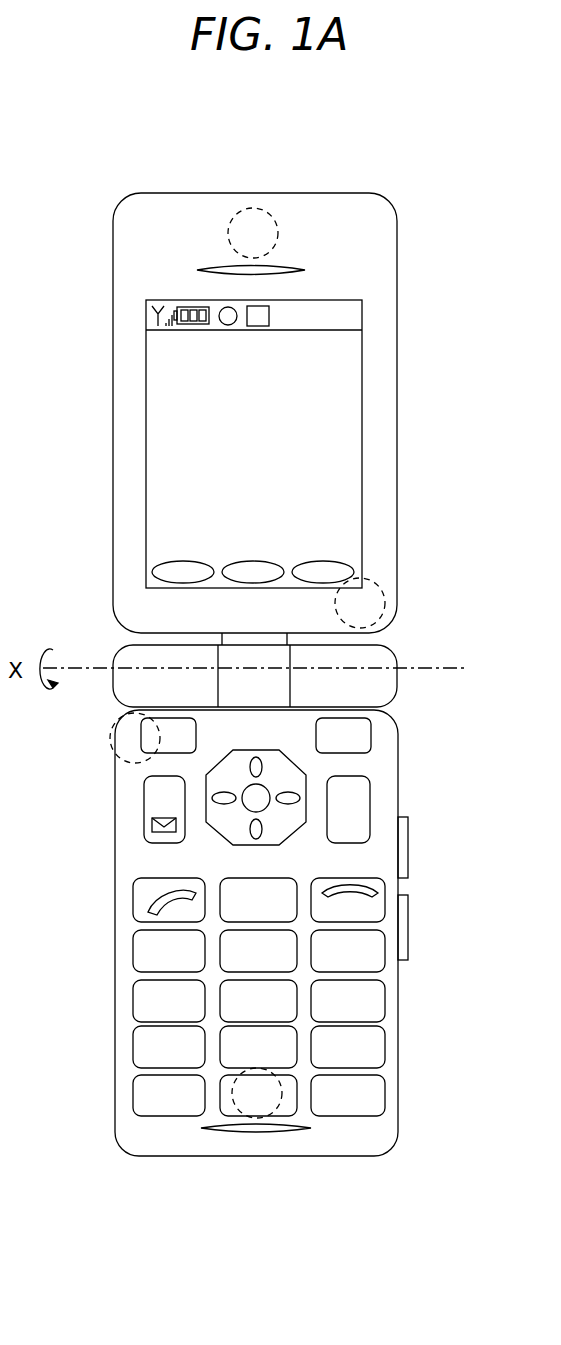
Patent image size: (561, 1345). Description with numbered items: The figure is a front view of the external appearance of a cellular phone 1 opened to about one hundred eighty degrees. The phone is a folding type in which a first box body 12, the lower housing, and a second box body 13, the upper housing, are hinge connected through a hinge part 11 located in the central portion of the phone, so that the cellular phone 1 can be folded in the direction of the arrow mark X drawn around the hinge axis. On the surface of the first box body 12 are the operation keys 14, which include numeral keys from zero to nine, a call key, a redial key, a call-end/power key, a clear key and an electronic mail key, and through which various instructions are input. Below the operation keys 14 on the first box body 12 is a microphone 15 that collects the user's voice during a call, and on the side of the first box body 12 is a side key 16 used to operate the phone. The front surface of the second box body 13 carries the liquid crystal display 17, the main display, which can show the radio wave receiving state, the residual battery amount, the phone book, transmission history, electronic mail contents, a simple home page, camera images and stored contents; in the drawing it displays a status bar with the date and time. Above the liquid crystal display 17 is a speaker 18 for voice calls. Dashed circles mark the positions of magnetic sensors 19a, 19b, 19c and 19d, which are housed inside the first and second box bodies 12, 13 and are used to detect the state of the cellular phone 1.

The cellular phone 1 is at (413, 977).
The hinge part 11 is at (397, 662).
The first box body 12 is at (398, 745).
The second box body 13 is at (378, 395).
The operation keys 14 is at (100, 738).
The microphone 15 is at (300, 1130).
The side key 16 is at (408, 840).
The liquid crystal display 17 is at (350, 352).
The speaker 18 is at (300, 268).
The magnetic sensor 19a is at (278, 229).
The magnetic sensor 19b is at (283, 1090).
The magnetic sensor 19c is at (386, 601).
The magnetic sensor 19d is at (115, 721).